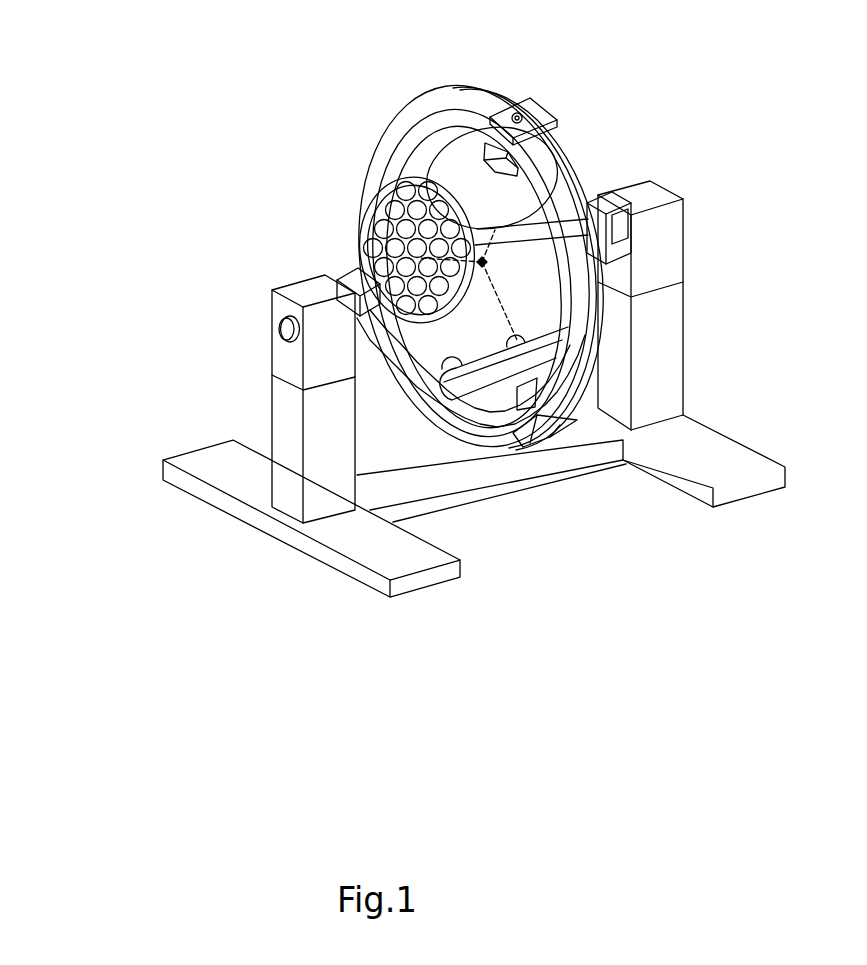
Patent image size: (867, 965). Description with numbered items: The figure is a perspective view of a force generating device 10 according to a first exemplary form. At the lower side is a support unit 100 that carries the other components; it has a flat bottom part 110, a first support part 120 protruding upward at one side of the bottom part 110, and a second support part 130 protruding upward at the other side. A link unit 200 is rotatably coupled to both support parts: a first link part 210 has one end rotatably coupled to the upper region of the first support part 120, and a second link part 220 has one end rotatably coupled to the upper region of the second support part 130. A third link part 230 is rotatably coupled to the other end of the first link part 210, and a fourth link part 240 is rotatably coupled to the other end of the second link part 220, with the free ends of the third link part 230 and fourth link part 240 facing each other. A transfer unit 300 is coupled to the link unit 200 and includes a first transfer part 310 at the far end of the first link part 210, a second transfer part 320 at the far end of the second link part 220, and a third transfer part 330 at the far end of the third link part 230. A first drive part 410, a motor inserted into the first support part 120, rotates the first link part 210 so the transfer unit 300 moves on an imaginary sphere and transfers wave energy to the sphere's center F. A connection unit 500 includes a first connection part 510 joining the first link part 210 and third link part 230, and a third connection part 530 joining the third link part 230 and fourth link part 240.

The force generating device 10 is at (270, 25).
The support unit 100 is at (82, 146).
The bottom part 110 is at (591, 463).
The first support part 120 is at (282, 484).
The second support part 130 is at (663, 348).
The link unit 200 is at (82, 243).
The first link part 210 is at (407, 390).
The second link part 220 is at (525, 240).
The third link part 230 is at (582, 270).
The fourth link part 240 is at (405, 113).
The transfer unit 300 is at (82, 365).
The first transfer part 310 is at (452, 388).
The second transfer part 320 is at (363, 220).
The third transfer part 330 is at (466, 163).
The first drive part 410 is at (278, 330).
The connection unit 500 is at (82, 465).
The first connection part 510 is at (547, 432).
The third connection part 530 is at (540, 120).
The center of the imaginary sphere F is at (482, 262).